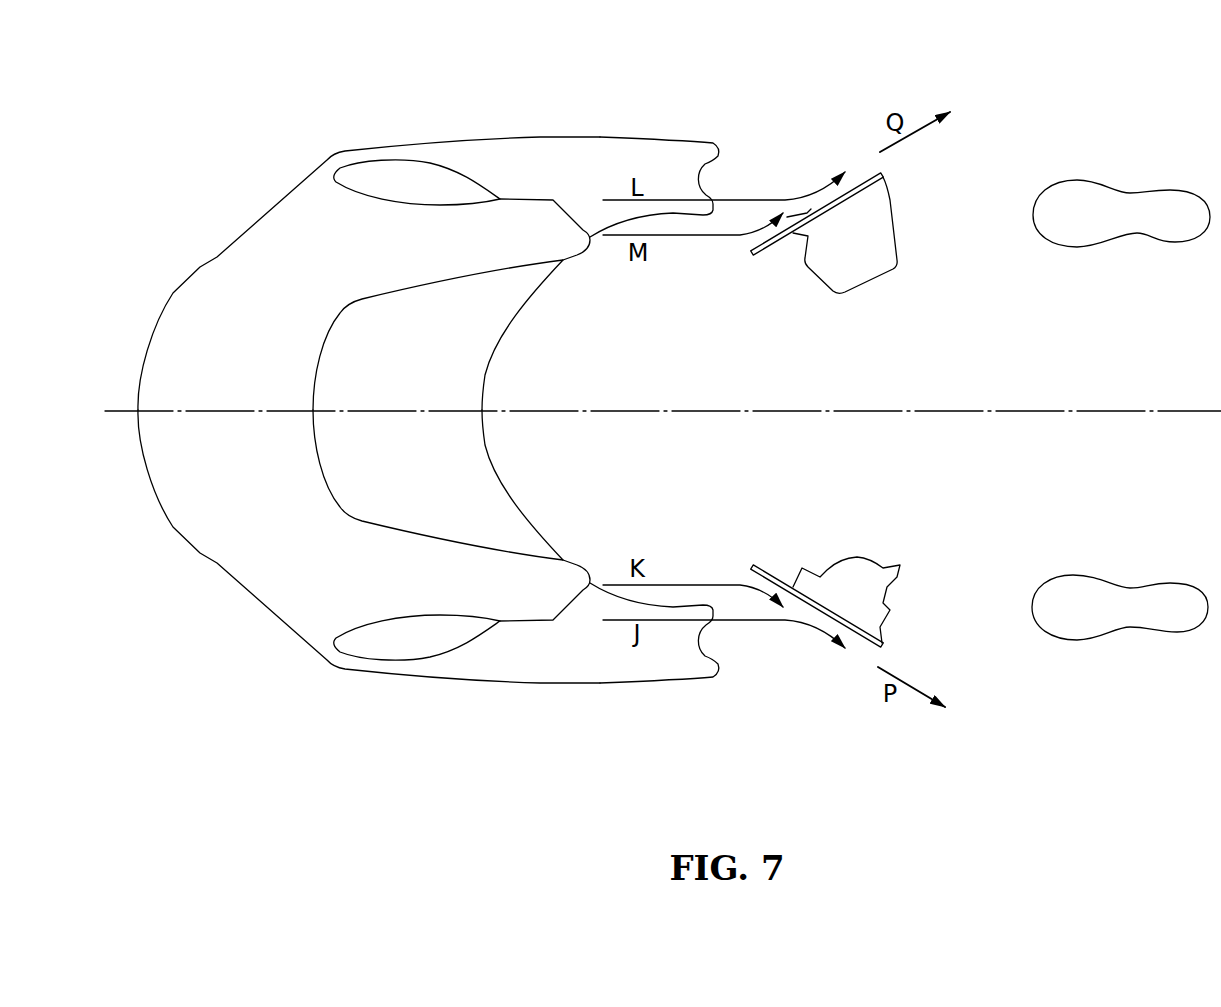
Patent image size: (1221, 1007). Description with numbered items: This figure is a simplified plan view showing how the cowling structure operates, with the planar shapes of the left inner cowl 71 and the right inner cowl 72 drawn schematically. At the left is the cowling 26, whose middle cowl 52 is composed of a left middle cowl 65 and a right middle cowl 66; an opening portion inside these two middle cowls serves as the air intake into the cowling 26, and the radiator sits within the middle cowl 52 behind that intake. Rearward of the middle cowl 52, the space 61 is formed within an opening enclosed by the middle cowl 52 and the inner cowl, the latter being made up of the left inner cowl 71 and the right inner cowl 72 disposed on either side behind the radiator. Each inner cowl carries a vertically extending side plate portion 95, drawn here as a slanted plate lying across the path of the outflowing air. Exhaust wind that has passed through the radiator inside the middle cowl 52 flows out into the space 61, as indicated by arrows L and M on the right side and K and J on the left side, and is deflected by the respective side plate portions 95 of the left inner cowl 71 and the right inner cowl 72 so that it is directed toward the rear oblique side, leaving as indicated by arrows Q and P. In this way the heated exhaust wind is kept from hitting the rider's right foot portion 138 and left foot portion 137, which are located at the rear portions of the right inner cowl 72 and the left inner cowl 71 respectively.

The cowling 26 is at (233, 238).
The middle cowl 52 is at (620, 391).
The right middle cowl 66 is at (632, 153).
The left middle cowl 65 is at (632, 667).
The space 61 is at (757, 170).
The side plate portion 95 is at (772, 252).
The right inner cowl 72 is at (865, 268).
The left inner cowl 71 is at (868, 570).
The right foot portion 138 is at (1120, 187).
The left foot portion 137 is at (1123, 633).